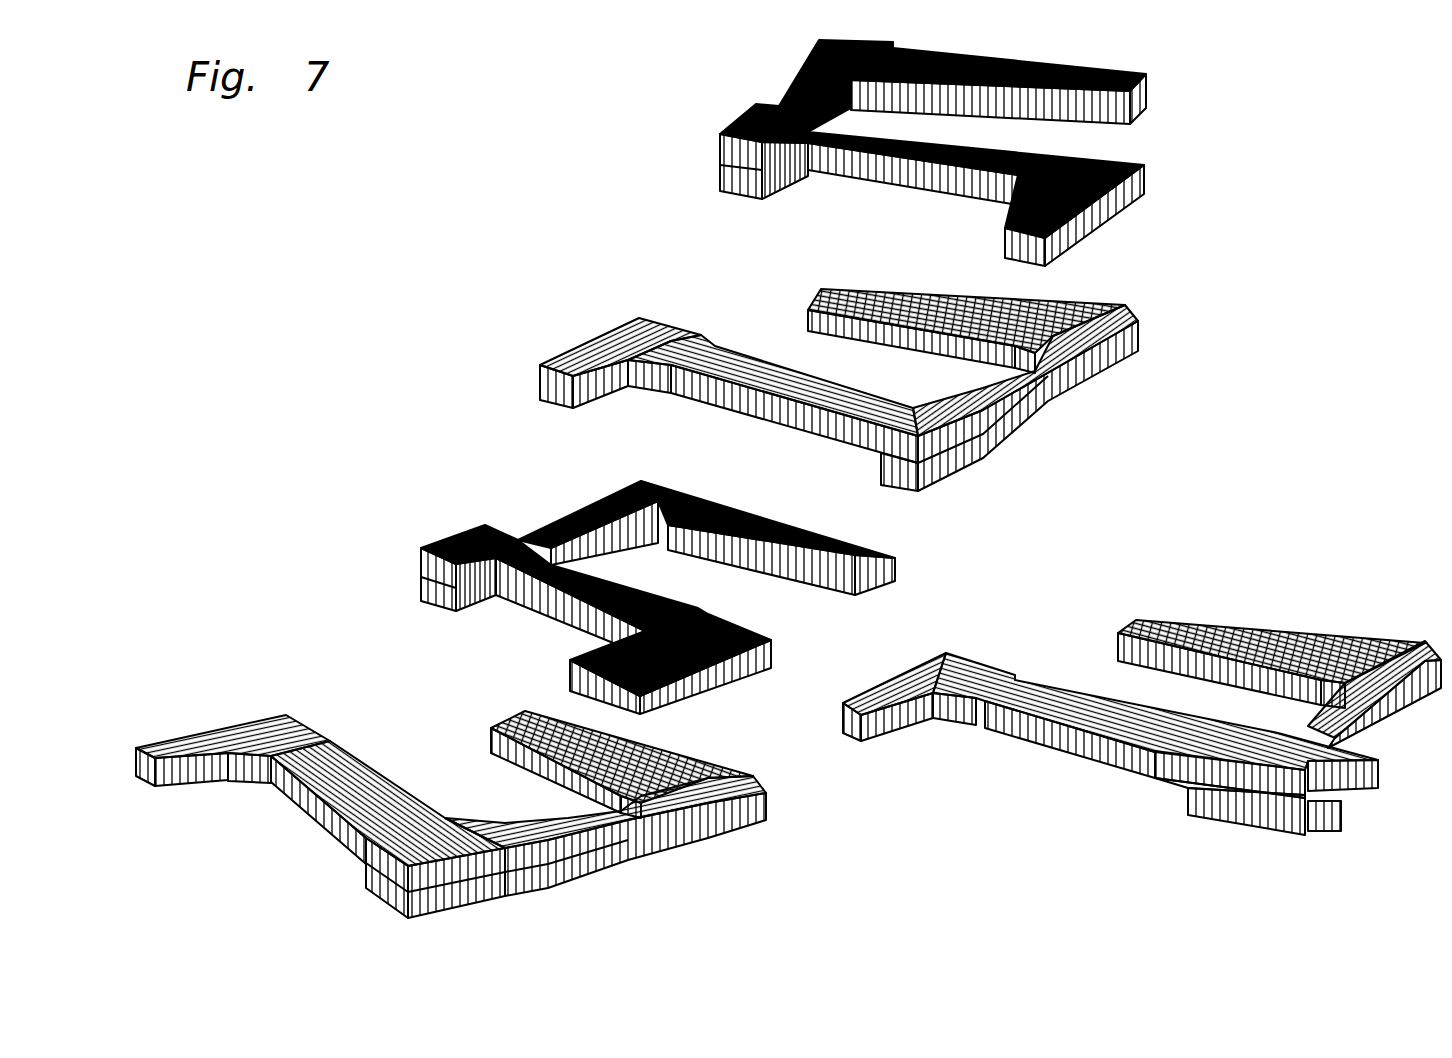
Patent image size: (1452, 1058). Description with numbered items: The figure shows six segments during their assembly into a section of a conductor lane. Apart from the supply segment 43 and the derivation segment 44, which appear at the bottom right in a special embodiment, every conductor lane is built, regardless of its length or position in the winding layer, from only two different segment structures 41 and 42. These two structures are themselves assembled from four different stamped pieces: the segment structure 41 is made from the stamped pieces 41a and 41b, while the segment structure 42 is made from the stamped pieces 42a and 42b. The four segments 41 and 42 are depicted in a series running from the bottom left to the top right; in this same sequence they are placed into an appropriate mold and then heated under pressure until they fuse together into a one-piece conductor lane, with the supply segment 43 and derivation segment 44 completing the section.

The segment structure 41 is at (641, 575).
The stamped piece 41a is at (618, 319).
The stamped piece 41b is at (798, 288).
The segment structure 42 is at (808, 377).
The stamped piece 42a is at (1134, 172).
The stamped piece 42b is at (1136, 86).
The supply segment 43 is at (1080, 733).
The derivation segment 44 is at (1232, 648).